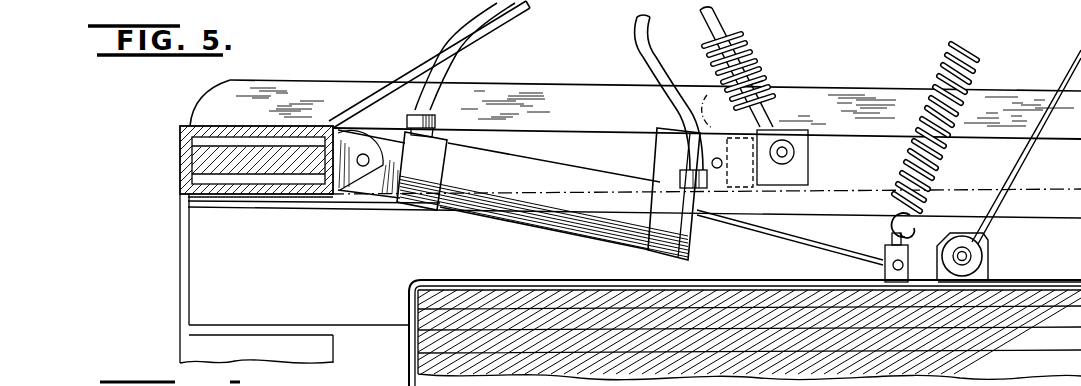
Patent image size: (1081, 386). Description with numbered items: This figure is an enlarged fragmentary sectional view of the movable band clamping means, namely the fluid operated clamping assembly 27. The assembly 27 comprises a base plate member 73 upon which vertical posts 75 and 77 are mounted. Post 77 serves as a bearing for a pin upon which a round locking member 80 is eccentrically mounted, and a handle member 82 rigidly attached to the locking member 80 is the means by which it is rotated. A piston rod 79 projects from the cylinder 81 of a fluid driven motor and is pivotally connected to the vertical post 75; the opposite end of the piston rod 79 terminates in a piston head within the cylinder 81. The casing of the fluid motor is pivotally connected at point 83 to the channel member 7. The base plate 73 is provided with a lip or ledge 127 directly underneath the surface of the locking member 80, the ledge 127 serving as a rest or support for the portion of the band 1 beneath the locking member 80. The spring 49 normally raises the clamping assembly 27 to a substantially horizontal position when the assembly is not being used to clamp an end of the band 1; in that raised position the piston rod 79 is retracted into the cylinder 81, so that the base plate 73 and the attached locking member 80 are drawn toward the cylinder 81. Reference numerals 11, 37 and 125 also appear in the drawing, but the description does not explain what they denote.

The band 1 is at (763, 276).
The channel member 7 is at (181, 157).
The core block 11 is at (202, 160).
The fluid operated clamping assembly 27 is at (483, 258).
The strut 37 is at (496, 34).
The spring 49 is at (941, 160).
The base plate member 73 is at (1027, 297).
The vertical post 75 is at (870, 246).
The vertical post 77 is at (983, 240).
The piston rod 79 is at (783, 235).
The round locking member 80 is at (982, 252).
The cylinder 81 is at (547, 228).
The handle member 82 is at (1022, 164).
The pivot point 83 is at (362, 170).
The bracket 125 is at (917, 268).
The lip or ledge 127 is at (993, 280).